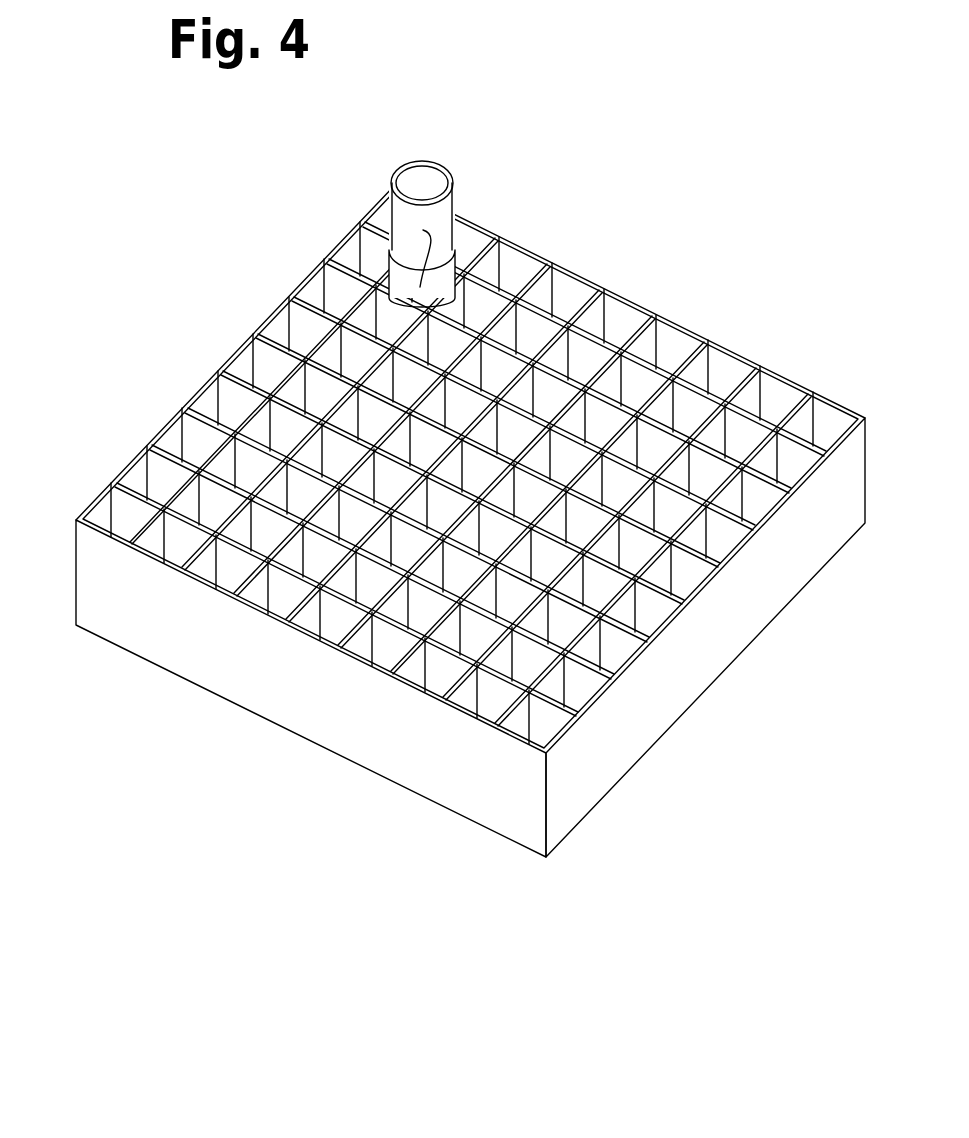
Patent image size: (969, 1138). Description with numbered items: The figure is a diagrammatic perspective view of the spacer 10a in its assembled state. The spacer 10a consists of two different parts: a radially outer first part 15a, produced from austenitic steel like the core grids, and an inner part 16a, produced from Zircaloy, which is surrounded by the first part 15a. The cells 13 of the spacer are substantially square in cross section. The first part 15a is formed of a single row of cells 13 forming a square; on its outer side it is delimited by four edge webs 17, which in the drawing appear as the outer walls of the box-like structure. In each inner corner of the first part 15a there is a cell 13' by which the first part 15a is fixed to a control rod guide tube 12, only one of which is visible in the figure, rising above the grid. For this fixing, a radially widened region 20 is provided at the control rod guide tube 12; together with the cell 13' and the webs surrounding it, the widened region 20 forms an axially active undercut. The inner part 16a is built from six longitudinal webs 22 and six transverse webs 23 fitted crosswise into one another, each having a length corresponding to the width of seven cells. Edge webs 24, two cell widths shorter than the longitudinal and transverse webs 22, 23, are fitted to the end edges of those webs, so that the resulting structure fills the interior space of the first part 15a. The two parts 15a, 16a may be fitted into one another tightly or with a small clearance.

The spacer 10a is at (445, 882).
The control rod guide tube 12 is at (424, 175).
The cell 13 is at (417, 464).
The cell 13' is at (470, 577).
The first part 15a is at (535, 805).
The inner part 16a is at (431, 595).
The edge web 17 is at (668, 405).
The radially widened region 20 is at (453, 215).
The longitudinal web 22 is at (585, 362).
The transverse web 23 is at (257, 467).
The edge web 24 is at (618, 397).